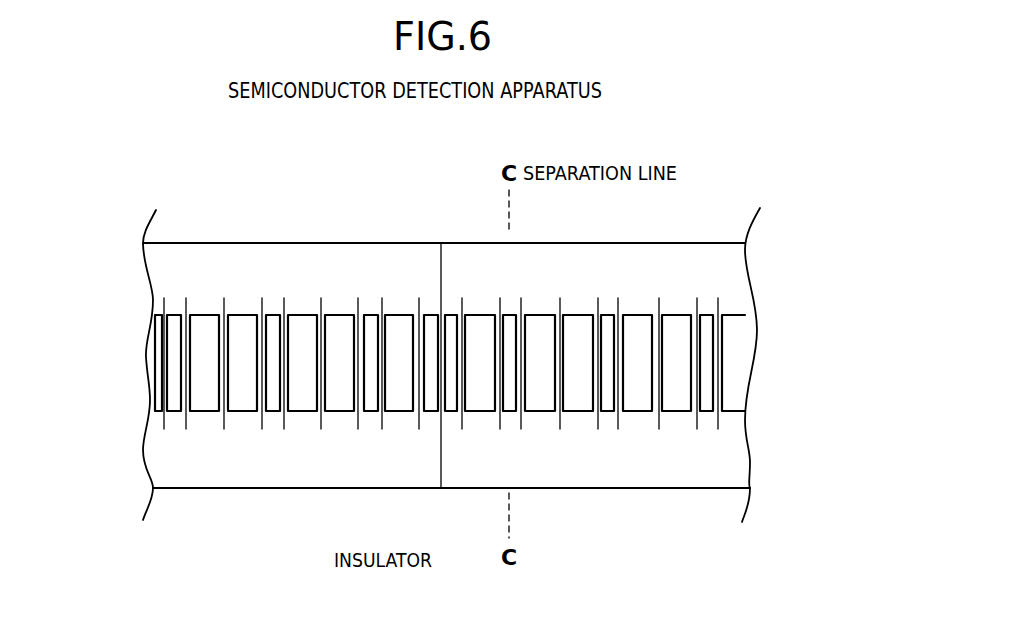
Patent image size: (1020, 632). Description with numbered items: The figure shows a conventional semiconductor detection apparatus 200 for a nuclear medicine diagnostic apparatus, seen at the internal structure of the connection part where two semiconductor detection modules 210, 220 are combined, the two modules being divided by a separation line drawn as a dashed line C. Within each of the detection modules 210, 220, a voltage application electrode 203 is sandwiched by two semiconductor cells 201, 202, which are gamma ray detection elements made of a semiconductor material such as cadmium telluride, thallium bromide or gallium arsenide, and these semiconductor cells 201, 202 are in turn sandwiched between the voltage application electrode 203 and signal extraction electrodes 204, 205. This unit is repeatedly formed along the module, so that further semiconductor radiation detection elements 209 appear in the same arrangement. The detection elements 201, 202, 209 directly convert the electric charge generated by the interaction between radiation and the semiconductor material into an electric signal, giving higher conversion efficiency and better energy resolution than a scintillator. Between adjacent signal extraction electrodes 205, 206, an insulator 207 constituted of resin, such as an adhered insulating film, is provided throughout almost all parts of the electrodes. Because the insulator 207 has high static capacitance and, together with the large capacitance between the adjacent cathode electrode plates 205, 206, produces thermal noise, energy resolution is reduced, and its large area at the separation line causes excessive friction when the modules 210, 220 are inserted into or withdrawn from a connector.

The semiconductor detection apparatus 200 is at (215, 148).
The semiconductor radiation detection element 201 is at (302, 400).
The semiconductor radiation detection element 202 is at (339, 400).
The voltage application electrode 203 is at (321, 298).
The signal extraction electrode 204 is at (284, 298).
The signal extraction electrode 205 is at (358, 298).
The signal extraction electrode 206 is at (382, 298).
The insulator 207 is at (370, 400).
The semiconductor radiation detection element 209 is at (480, 410).
The semiconductor detection module 210 is at (219, 243).
The semiconductor detection module 220 is at (675, 243).